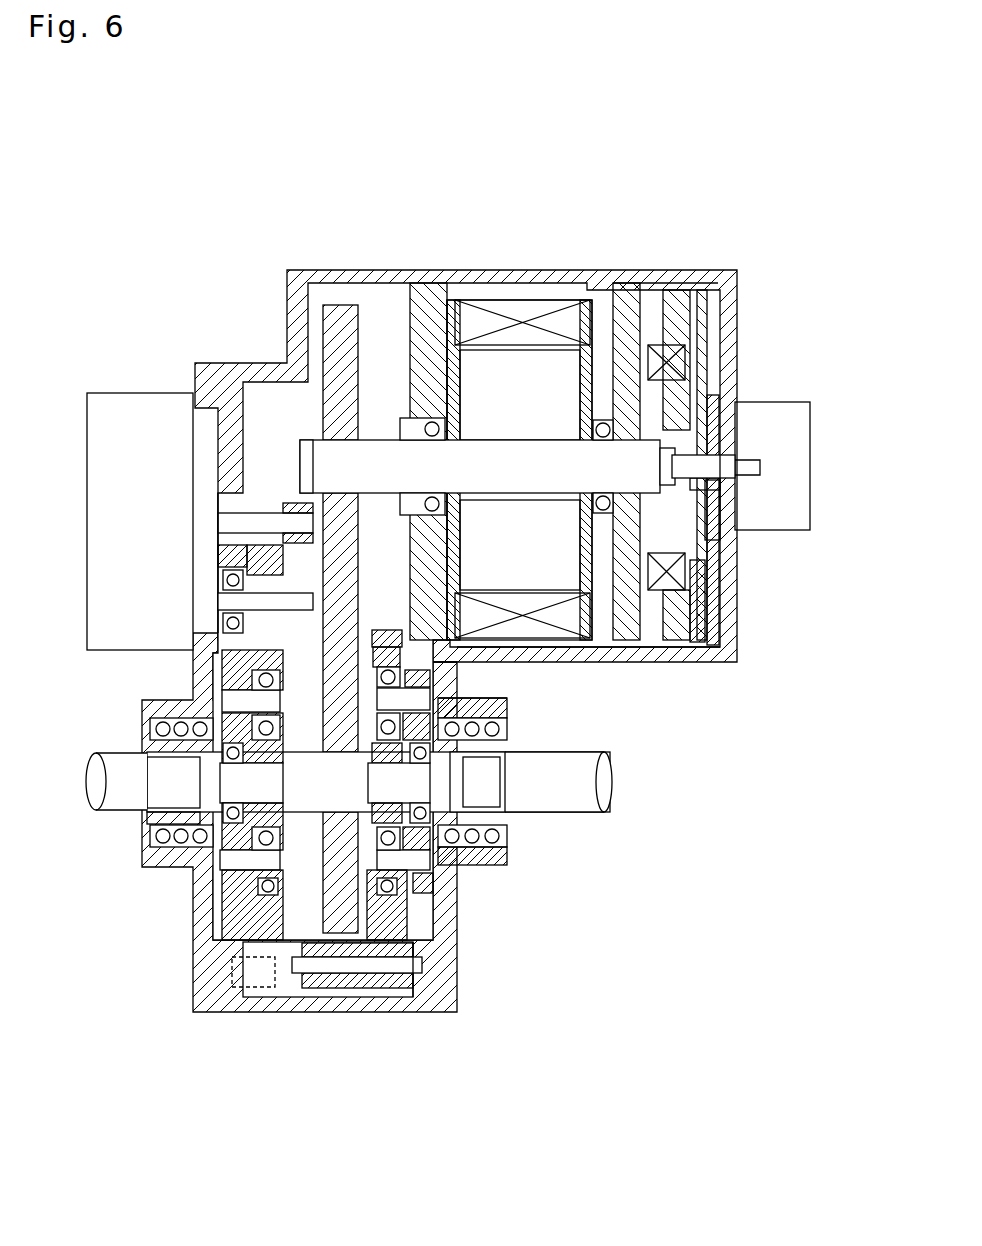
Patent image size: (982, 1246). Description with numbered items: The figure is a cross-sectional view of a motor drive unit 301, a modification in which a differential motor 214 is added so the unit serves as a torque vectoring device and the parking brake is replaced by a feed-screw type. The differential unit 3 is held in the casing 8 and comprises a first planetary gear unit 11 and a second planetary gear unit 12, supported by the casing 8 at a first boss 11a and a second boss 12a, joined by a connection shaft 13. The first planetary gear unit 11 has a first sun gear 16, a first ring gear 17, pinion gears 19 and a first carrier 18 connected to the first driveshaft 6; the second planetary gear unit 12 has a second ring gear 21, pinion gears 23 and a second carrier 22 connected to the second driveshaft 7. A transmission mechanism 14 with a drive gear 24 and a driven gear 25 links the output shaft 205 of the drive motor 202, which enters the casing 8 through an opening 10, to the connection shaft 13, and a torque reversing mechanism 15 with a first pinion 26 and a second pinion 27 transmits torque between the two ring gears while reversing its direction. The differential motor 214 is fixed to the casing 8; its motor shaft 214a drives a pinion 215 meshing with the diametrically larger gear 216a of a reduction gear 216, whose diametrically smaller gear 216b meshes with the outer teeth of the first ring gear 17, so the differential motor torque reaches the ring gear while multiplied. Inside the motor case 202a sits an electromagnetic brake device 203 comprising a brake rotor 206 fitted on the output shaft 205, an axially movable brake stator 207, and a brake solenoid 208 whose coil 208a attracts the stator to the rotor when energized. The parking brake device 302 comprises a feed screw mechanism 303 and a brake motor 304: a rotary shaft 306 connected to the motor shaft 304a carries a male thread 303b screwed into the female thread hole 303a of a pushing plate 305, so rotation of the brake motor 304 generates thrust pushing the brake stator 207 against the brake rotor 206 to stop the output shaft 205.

The differential unit 3 is at (236, 923).
The first driveshaft 6 is at (110, 768).
The second driveshaft 7 is at (583, 800).
The casing 8 is at (287, 296).
The opening 10 is at (393, 433).
The first planetary gear unit 11 is at (222, 690).
The first boss 11a is at (162, 820).
The second planetary gear unit 12 is at (416, 921).
The second boss 12a is at (508, 818).
The connection shaft 13 is at (307, 795).
The transmission mechanism 14 is at (570, 678).
The torque reversing mechanism 15 is at (316, 1022).
The first sun gear 16 is at (190, 781).
The first ring gear 17 is at (262, 968).
The first carrier 18 is at (165, 722).
The pinion gears 19 is at (228, 627).
The second ring gear 21 is at (385, 958).
The second carrier 22 is at (450, 868).
The pinion gears 23 is at (345, 738).
The drive gear 24 is at (478, 652).
The driven gear 25 is at (460, 702).
The first pinion 26 is at (275, 970).
The second pinion 27 is at (350, 968).
The drive motor 202 is at (532, 370).
The motor case 202a is at (668, 658).
The electromagnetic brake device 203 is at (590, 205).
The output shaft 205 is at (373, 460).
The brake rotor 206 is at (627, 300).
The brake stator 207 is at (678, 300).
The brake solenoid 208 is at (707, 300).
The coil 208a is at (722, 302).
The differential motor 214 is at (128, 417).
The motor shaft 214a is at (218, 523).
The pinion 215 is at (275, 572).
The reduction gear 216 is at (240, 520).
The diametrically larger gear 216a is at (265, 560).
The diametrically smaller gear 216b is at (260, 553).
The motor drive unit 301 is at (628, 144).
The parking brake device 302 is at (835, 327).
The feed screw mechanism 303 is at (720, 420).
The female thread hole 303a is at (720, 527).
The male thread 303b is at (708, 488).
The brake motor 304 is at (777, 401).
The motor shaft 304a is at (757, 475).
The pushing plate 305 is at (718, 578).
The rotary shaft 306 is at (677, 452).